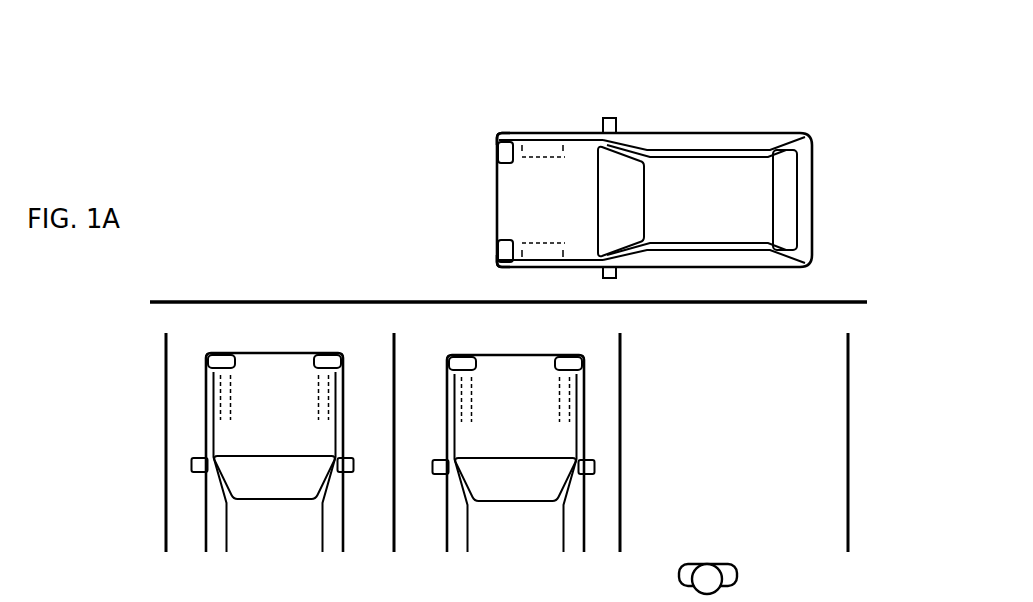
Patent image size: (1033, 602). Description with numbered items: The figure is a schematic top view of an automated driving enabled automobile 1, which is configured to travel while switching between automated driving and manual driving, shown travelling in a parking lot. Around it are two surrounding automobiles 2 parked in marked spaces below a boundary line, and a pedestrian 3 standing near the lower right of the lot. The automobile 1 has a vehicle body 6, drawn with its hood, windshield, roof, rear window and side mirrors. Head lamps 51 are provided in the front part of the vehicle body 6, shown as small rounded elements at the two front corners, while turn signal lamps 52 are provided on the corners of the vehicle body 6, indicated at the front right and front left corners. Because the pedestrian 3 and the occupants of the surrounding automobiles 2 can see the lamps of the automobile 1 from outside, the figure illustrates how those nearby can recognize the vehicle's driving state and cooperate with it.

The automated driving enabled automobile 1 is at (698, 106).
The surrounding automobiles 2 is at (277, 378).
The pedestrian 3 is at (740, 577).
The vehicle body 6 is at (588, 131).
The head lamps 51 is at (493, 152).
The turn signal lamps 52 is at (502, 133).